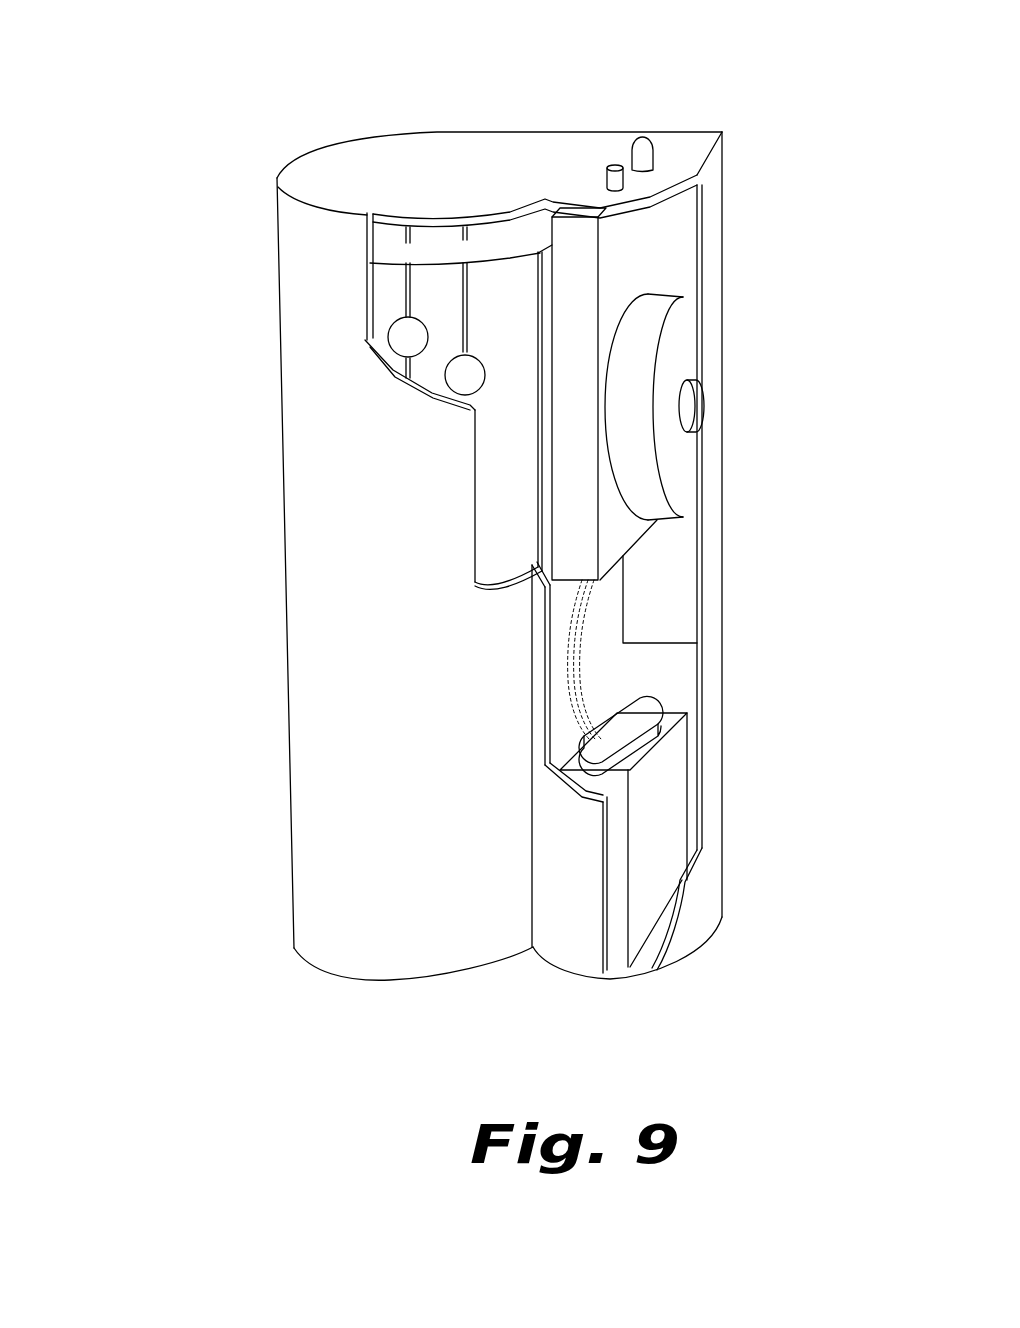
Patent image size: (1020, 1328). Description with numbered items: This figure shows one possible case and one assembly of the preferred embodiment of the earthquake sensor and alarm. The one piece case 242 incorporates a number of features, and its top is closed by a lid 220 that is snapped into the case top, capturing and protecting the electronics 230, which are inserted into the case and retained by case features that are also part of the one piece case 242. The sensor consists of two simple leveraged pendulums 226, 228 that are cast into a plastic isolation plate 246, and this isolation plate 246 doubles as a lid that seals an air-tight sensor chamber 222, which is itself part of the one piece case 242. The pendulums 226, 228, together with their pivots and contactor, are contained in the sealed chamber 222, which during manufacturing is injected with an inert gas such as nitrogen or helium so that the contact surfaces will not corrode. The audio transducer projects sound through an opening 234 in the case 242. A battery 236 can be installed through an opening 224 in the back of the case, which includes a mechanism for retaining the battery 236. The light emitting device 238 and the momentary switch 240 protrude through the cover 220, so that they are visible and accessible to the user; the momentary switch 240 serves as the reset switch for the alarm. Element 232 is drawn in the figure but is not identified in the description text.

The lid 220 is at (363, 163).
The sealed chamber 222 is at (512, 486).
The opening 224 is at (667, 680).
The pendulum 226 is at (405, 304).
The pendulum 228 is at (448, 356).
The electronics 230 is at (637, 243).
The disk 232 is at (683, 333).
The opening 234 is at (703, 407).
The battery 236 is at (670, 773).
The light emitting device 238 is at (643, 143).
The momentary switch 240 is at (610, 167).
The case 242 is at (332, 840).
The isolation plate 246 is at (387, 243).